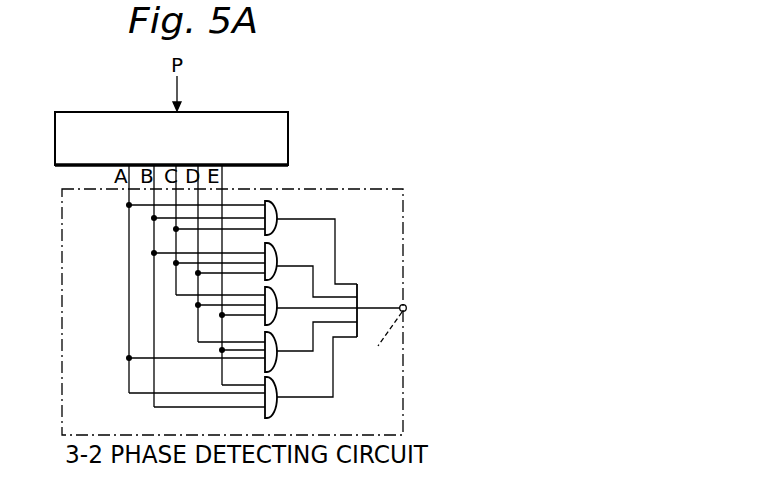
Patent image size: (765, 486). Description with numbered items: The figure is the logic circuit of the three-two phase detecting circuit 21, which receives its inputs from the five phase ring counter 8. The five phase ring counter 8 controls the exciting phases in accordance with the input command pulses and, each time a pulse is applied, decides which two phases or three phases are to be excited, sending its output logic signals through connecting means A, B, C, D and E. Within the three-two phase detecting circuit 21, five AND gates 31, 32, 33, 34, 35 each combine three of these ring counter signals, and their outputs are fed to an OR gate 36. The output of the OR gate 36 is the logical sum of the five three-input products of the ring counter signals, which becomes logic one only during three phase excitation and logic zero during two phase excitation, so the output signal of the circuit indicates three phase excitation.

The five phase ring counter 8 is at (288, 135).
The three-two phase detecting circuit 21 is at (403, 423).
The AND gate 31 is at (278, 212).
The AND gate 32 is at (278, 254).
The AND gate 33 is at (284, 295).
The AND gate 34 is at (278, 342).
The AND gate 35 is at (278, 388).
The OR gate 36 is at (358, 284).